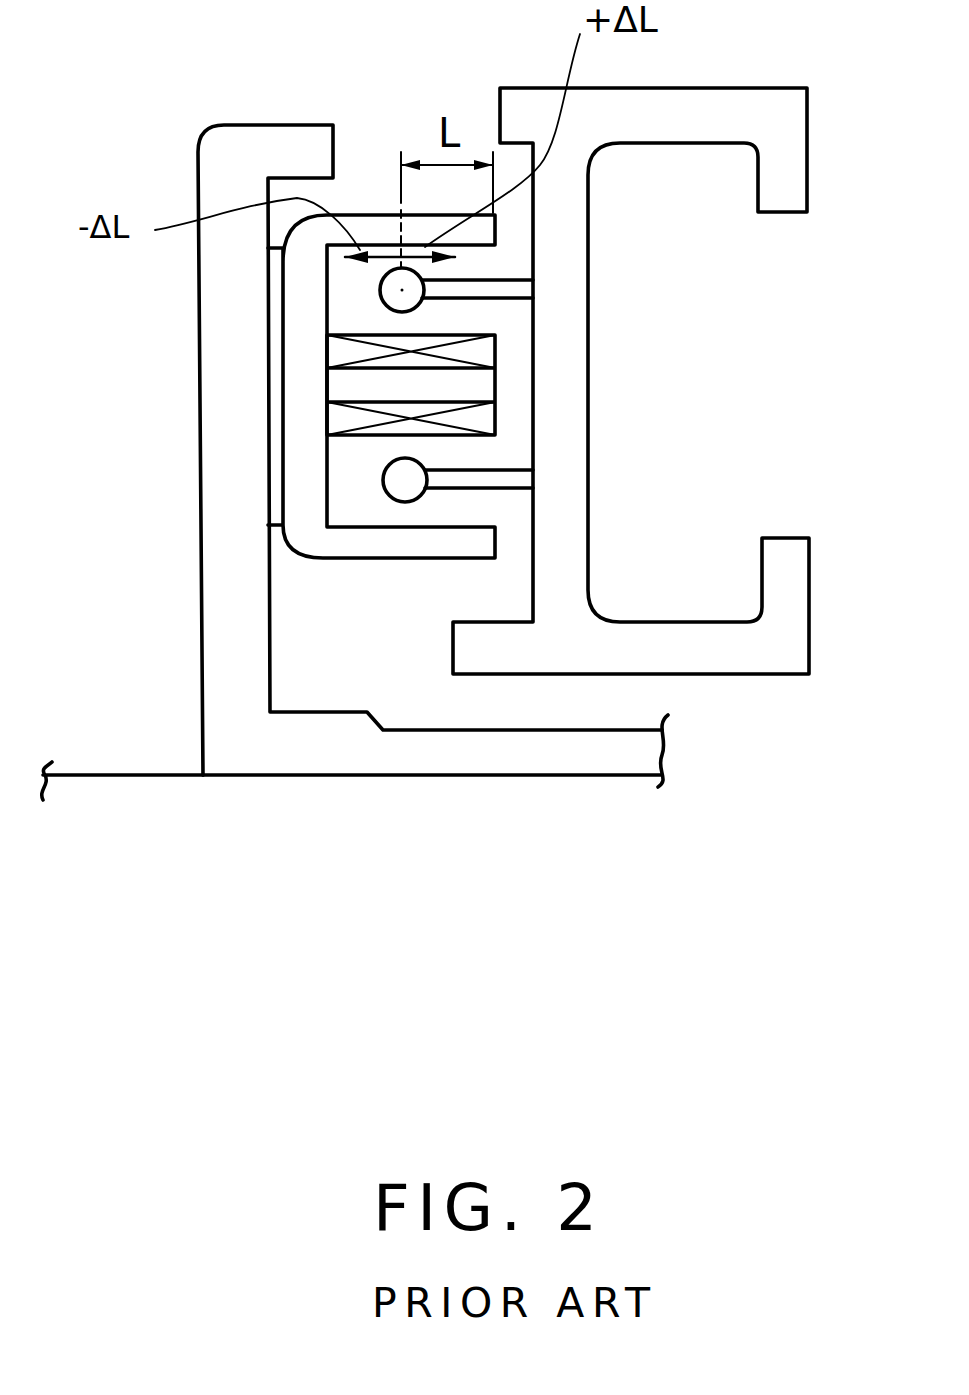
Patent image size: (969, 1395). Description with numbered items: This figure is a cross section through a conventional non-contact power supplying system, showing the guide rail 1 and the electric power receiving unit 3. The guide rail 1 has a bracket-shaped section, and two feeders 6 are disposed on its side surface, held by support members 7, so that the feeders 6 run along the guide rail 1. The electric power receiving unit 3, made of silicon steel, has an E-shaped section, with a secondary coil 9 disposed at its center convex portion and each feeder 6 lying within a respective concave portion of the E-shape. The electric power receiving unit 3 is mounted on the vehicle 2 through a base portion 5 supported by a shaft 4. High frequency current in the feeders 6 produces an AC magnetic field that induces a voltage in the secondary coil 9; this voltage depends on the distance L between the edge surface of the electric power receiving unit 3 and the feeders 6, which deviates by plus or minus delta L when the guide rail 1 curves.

The guide rail 1 is at (795, 150).
The vehicle 2 is at (112, 808).
The electric power receiving unit 3 is at (305, 478).
The shaft 4 is at (221, 125).
The base portion 5 is at (467, 758).
The feeders 6 is at (387, 267).
The support members 7 is at (508, 468).
The secondary coil 9 is at (357, 335).